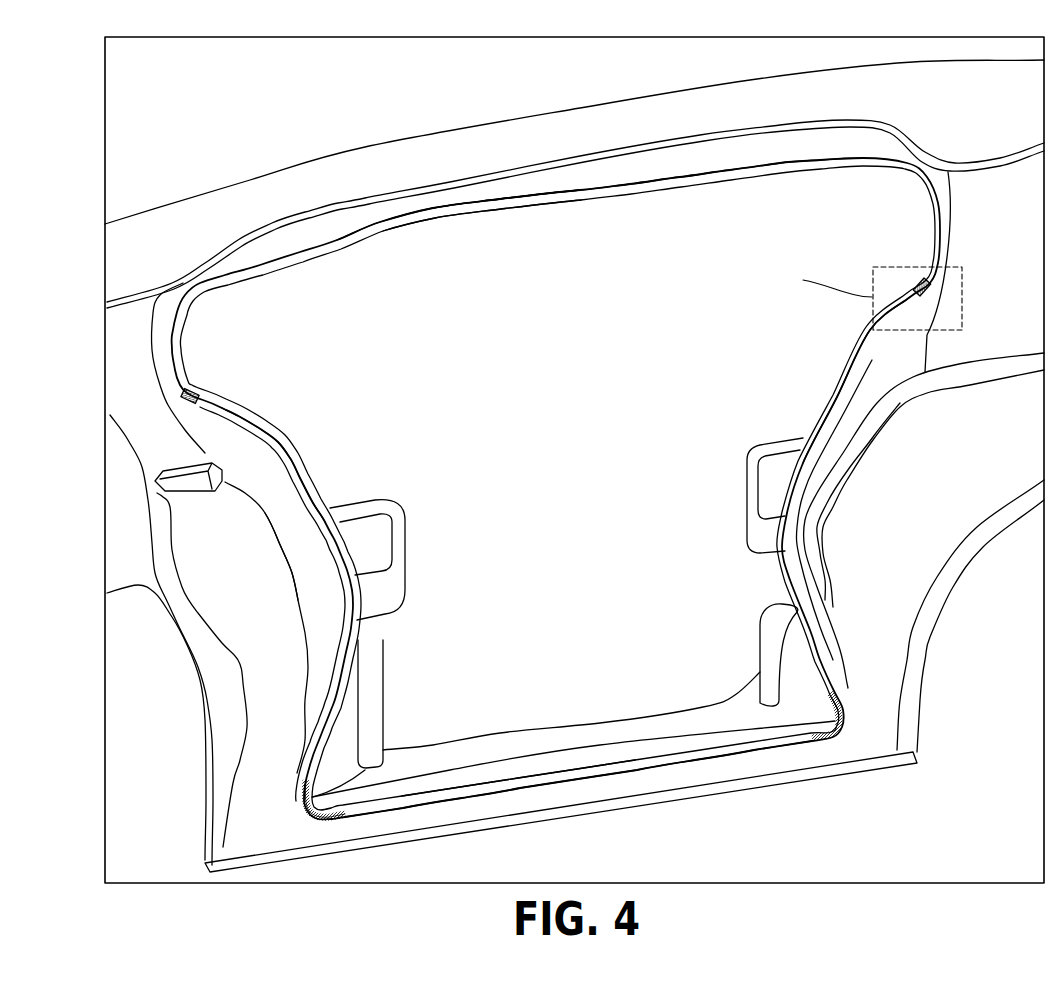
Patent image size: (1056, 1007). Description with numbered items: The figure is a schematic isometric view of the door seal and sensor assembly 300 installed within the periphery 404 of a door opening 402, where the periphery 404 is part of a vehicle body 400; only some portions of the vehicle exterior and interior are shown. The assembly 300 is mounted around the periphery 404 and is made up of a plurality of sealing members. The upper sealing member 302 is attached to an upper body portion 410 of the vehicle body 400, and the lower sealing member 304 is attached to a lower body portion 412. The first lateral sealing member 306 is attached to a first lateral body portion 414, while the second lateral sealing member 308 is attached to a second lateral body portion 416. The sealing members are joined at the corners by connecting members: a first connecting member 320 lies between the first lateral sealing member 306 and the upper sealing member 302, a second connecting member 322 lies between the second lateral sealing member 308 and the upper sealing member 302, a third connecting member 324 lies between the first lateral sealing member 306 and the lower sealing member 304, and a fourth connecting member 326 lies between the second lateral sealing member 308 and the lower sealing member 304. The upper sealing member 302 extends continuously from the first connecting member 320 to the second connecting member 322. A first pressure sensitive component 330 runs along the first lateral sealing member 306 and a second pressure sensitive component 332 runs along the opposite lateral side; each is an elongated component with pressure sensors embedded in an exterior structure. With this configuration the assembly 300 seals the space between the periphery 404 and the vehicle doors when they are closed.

The door seal and sensor assembly 300 is at (585, 190).
The upper sealing member 302 is at (522, 220).
The lower sealing member 304 is at (635, 763).
The first lateral sealing member 306 is at (305, 575).
The second lateral sealing member 308 is at (827, 423).
The first connecting member 320 is at (181, 398).
The second connecting member 322 is at (930, 290).
The third connecting member 324 is at (313, 824).
The fourth connecting member 326 is at (840, 745).
The first pressure sensitive component 330 is at (298, 447).
The second pressure sensitive component 332 is at (833, 377).
The vehicle body 400 is at (990, 116).
The door opening 402 is at (405, 280).
The periphery 404 is at (337, 238).
The upper body portion 410 is at (492, 198).
The lower body portion 412 is at (547, 796).
The first lateral body portion 414 is at (268, 515).
The second lateral body portion 416 is at (850, 405).